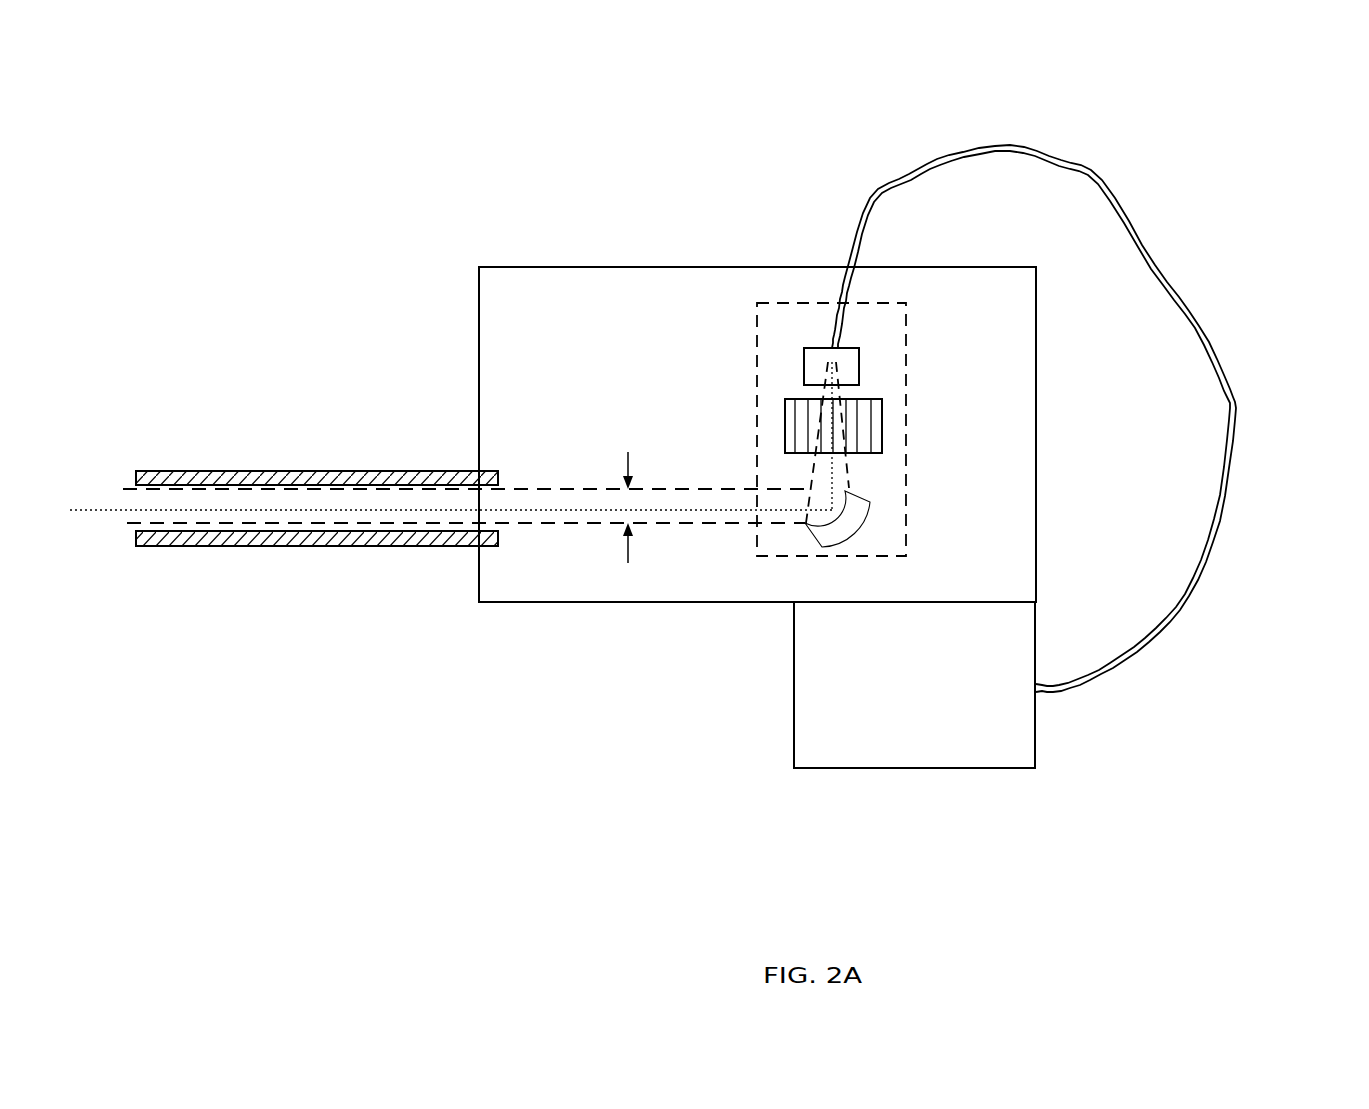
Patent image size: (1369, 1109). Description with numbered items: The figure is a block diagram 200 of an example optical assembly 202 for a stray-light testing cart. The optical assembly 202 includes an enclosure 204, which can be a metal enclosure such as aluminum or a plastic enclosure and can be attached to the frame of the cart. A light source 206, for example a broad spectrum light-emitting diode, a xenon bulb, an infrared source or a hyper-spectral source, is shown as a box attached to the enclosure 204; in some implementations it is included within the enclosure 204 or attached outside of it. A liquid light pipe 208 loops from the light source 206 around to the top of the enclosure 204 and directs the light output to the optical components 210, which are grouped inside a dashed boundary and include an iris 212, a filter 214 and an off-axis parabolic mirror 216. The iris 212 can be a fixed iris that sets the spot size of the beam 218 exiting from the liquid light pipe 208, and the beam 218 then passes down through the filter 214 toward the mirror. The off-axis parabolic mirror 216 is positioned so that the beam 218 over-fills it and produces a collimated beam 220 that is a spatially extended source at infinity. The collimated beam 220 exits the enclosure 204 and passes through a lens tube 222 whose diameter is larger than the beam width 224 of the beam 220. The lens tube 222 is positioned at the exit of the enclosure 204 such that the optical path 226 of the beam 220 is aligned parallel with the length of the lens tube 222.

The block diagram 200 is at (198, 115).
The optical assembly 202 is at (718, 136).
The enclosure 204 is at (517, 267).
The light source 206 is at (922, 711).
The liquid light pipe 208 is at (1187, 595).
The optical components 210 is at (906, 341).
The iris 212 is at (804, 360).
The filter 214 is at (785, 418).
The off-axis parabolic mirror 216 is at (848, 528).
The beam 218 is at (817, 437).
The collimated beam 220 is at (555, 523).
The lens tube 222 is at (292, 470).
The beam width 224 is at (628, 563).
The optical path 226 is at (228, 510).